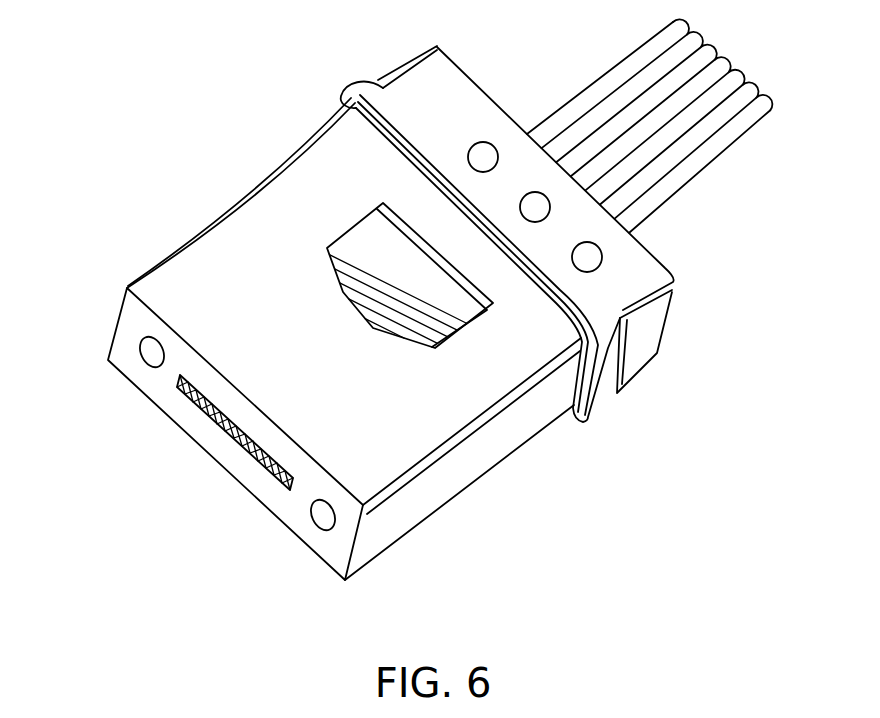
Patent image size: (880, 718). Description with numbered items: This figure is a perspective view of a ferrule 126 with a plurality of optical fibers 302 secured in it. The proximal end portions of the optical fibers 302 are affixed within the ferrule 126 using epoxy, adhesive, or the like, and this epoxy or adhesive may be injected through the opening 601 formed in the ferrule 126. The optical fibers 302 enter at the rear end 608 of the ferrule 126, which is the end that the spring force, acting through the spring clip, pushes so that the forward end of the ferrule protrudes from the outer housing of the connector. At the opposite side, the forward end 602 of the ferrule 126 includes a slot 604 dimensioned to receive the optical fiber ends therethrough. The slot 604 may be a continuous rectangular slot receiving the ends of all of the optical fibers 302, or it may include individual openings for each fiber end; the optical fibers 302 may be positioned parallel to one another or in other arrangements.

The ferrule 126 is at (193, 252).
The opening 601 is at (347, 234).
The rear end 608 is at (500, 97).
The optical fibers 302 is at (697, 157).
The forward end 602 is at (145, 375).
The slot 604 is at (210, 415).